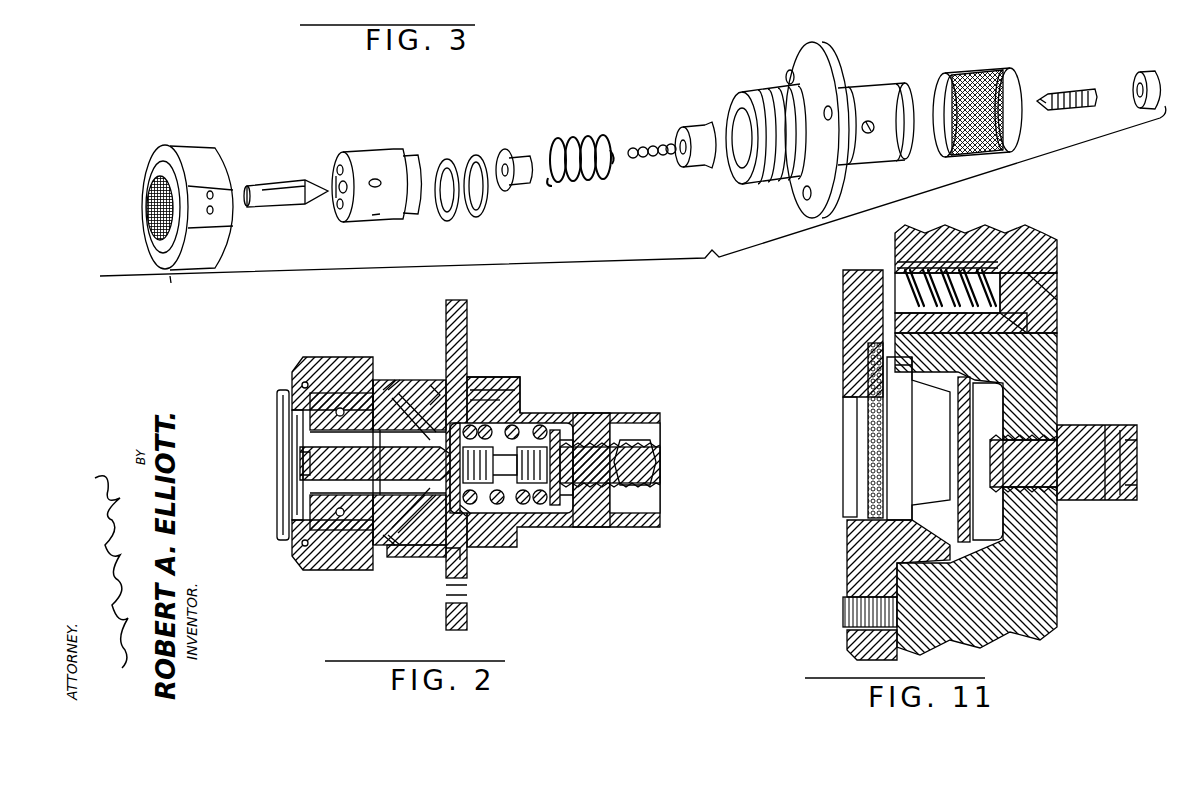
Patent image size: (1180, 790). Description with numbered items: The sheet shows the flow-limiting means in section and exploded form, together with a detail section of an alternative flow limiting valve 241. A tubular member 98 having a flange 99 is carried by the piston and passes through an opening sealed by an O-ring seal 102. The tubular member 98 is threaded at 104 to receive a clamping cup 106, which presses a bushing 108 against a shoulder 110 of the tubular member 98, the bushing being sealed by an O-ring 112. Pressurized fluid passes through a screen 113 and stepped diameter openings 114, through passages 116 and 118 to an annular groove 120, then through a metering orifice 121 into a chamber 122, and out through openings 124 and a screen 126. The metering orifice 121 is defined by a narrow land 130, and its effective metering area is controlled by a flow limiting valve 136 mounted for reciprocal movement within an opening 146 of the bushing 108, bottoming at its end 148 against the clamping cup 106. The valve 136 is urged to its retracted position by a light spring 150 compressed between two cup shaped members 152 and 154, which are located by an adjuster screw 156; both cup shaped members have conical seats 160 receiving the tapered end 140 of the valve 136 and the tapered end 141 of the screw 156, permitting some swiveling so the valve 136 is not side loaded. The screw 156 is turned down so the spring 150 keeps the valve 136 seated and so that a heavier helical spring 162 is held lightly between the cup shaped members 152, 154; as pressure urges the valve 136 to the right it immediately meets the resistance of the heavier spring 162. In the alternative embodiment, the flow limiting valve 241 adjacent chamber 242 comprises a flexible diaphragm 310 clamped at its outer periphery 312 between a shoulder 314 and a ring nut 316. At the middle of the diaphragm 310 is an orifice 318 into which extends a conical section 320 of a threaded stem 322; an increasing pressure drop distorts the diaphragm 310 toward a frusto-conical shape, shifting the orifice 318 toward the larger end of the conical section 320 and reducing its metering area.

In FIG. 3, the tubular member 98 is at (827, 125).
In FIG. 2, the tubular member 98 is at (470, 380).
In FIG. 3, the flange 99 is at (816, 60).
In FIG. 2, the flange 99 is at (466, 316).
In FIG. 2, the O-ring seal 102 is at (476, 393).
In FIG. 3, the threaded portion 104 is at (760, 187).
In FIG. 2, the threaded portion 104 is at (380, 380).
In FIG. 3, the clamping cup 106 is at (192, 152).
In FIG. 2, the clamping cup 106 is at (358, 378).
In FIG. 3, the bushing 108 is at (357, 176).
In FIG. 2, the bushing 108 is at (361, 469).
In FIG. 2, the shoulder 110 is at (427, 548).
In FIG. 3, the O-ring 112 is at (444, 208).
In FIG. 2, the O-ring 112 is at (400, 556).
In FIG. 3, the screen 113 is at (148, 236).
In FIG. 2, the screen 113 is at (277, 415).
In FIG. 2, the stepped diameter openings 114 is at (290, 520).
In FIG. 3, the passages 116 is at (340, 168).
In FIG. 2, the passages 116 is at (341, 408).
In FIG. 3, the passages 118 is at (378, 218).
In FIG. 2, the passages 118 is at (398, 378).
In FIG. 2, the annular groove 120 is at (437, 393).
In FIG. 2, the metering orifice 121 is at (447, 556).
In FIG. 2, the chamber 122 is at (506, 424).
In FIG. 3, the openings 124 is at (871, 135).
In FIG. 2, the openings 124 is at (566, 411).
In FIG. 3, the screen 126 is at (980, 75).
In FIG. 2, the narrow land 130 is at (462, 380).
In FIG. 3, the flow limiting valve 136 is at (282, 186).
In FIG. 2, the flow limiting valve 136 is at (300, 448).
In FIG. 2, the tapered end 140 is at (506, 412).
In FIG. 3, the tapered end of screw 141 is at (1047, 106).
In FIG. 2, the tapered end of screw 141 is at (558, 505).
In FIG. 3, the opening 146 is at (338, 205).
In FIG. 2, the opening 146 is at (300, 470).
In FIG. 2, the valve end 148 is at (300, 462).
In FIG. 3, the light spring 150 is at (650, 146).
In FIG. 2, the light spring 150 is at (505, 503).
In FIG. 3, the cup shaped member 152 is at (506, 192).
In FIG. 2, the cup shaped member 152 is at (470, 546).
In FIG. 3, the cup shaped member 154 is at (700, 170).
In FIG. 2, the cup shaped member 154 is at (578, 500).
In FIG. 3, the adjuster screw 156 is at (1068, 92).
In FIG. 2, the adjuster screw 156 is at (664, 462).
In FIG. 3, the conical seats 160 is at (489, 150).
In FIG. 2, the conical seats 160 is at (596, 416).
In FIG. 3, the heavier helical spring 162 is at (576, 186).
In FIG. 2, the heavier helical spring 162 is at (546, 425).
In FIG. 11, the flow limiting valve 241 is at (1075, 262).
In FIG. 11, the chamber 242 is at (922, 483).
In FIG. 11, the flexible diaphragm 310 is at (970, 400).
In FIG. 11, the outer periphery 312 is at (962, 400).
In FIG. 11, the shoulder 314 is at (1040, 545).
In FIG. 11, the ring nut 316 is at (870, 555).
In FIG. 11, the orifice 318 is at (960, 477).
In FIG. 11, the conical section 320 is at (960, 430).
In FIG. 11, the threaded stem 322 is at (1082, 496).